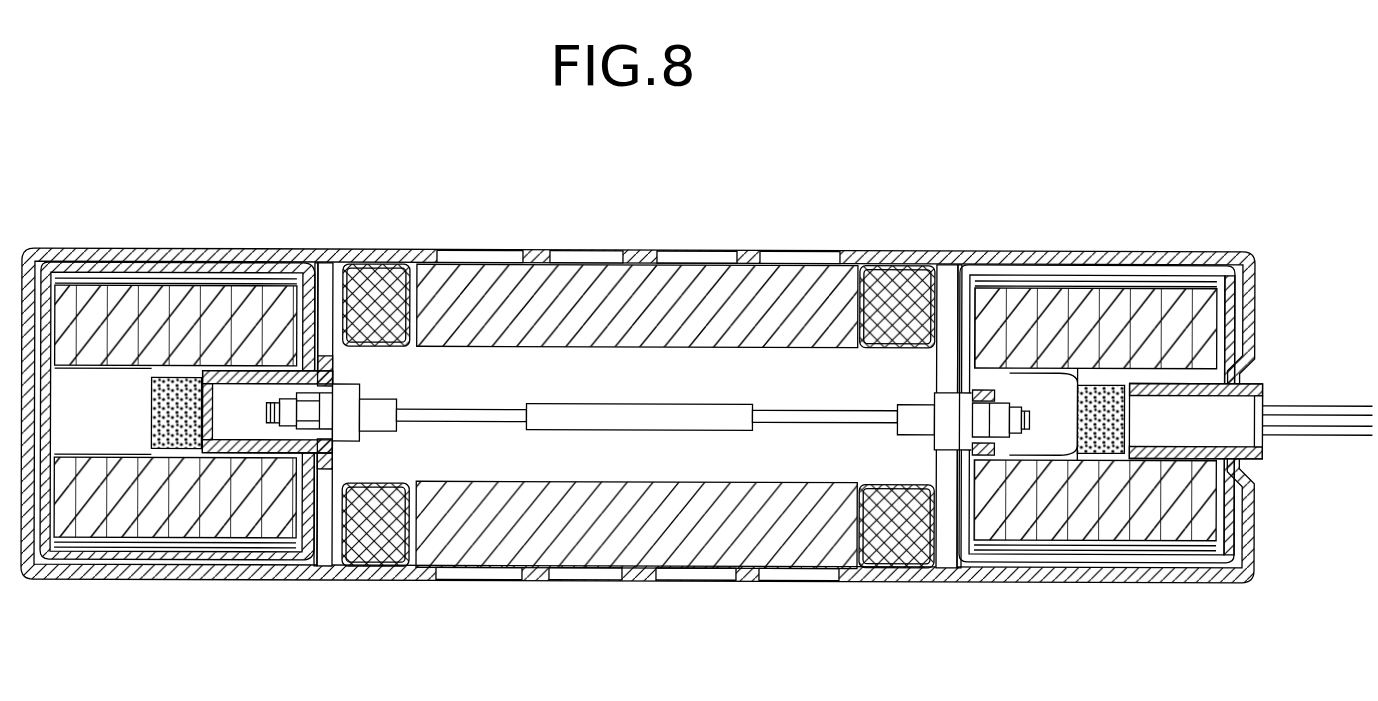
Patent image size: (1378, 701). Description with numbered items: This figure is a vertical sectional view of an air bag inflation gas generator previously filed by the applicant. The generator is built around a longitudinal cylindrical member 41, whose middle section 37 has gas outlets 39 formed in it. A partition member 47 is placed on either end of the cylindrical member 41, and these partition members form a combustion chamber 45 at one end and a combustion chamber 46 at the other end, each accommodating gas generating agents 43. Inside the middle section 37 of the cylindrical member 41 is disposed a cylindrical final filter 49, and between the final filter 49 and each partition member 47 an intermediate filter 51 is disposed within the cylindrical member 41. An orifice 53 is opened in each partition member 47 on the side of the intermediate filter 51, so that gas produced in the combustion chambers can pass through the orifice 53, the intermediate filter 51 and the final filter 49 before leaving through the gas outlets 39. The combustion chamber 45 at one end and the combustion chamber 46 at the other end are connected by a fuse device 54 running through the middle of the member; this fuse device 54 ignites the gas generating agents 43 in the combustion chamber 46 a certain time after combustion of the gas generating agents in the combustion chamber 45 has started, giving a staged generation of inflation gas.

The middle section 37 is at (686, 252).
The gas outlets 39 is at (556, 260).
The cylindrical member 41 is at (888, 258).
The gas generating agents 43 is at (190, 522).
The combustion chamber 45 is at (190, 256).
The combustion chamber 46 is at (1103, 256).
The partition member 47 is at (330, 322).
The final filter 49 is at (679, 540).
The intermediate filter 51 is at (385, 520).
The orifice 53 is at (956, 262).
The fuse device 54 is at (720, 432).